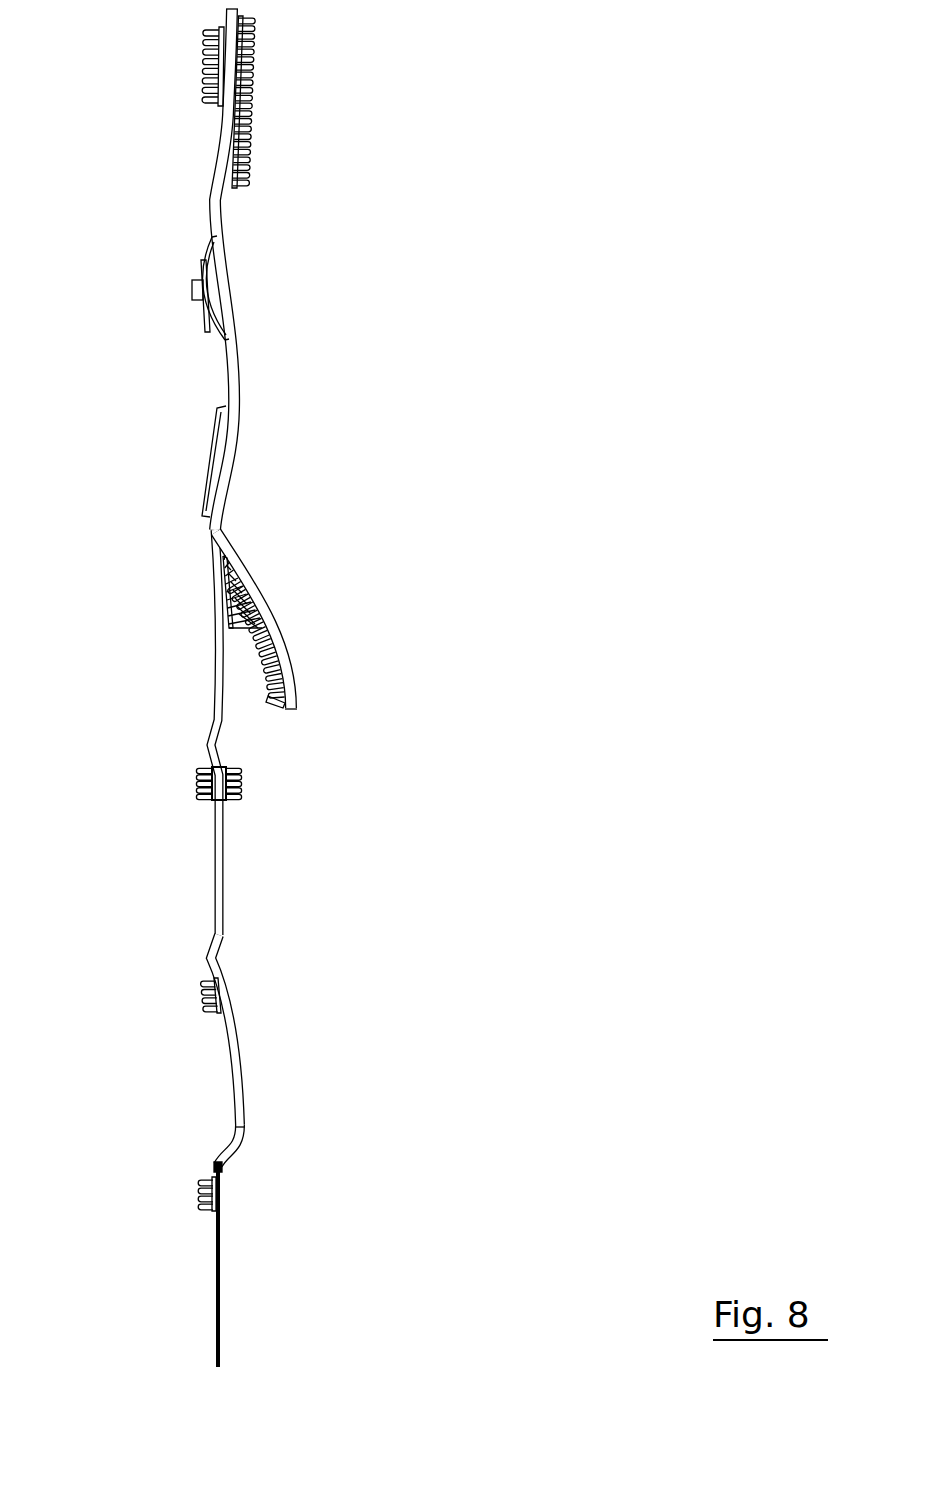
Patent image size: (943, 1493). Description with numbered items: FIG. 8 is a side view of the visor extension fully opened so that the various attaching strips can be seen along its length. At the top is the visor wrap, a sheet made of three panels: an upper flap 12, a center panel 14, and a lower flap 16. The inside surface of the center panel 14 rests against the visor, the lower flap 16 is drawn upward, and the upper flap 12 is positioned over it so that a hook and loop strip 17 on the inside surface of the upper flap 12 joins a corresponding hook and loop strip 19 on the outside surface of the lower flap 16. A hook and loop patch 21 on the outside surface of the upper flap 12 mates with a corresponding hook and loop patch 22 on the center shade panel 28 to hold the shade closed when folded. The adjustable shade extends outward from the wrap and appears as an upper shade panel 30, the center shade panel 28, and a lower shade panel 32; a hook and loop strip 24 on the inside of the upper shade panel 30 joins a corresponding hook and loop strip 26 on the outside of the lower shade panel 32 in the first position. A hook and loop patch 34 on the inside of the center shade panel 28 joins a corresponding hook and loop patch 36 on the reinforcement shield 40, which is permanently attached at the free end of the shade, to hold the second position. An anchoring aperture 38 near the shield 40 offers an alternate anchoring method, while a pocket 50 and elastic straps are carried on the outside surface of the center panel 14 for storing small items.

The upper flap 12 is at (210, 128).
The center panel 14 is at (236, 283).
The lower flap 16 is at (257, 583).
The hook and loop strip 17 is at (244, 167).
The corresponding hook and loop strip 19 is at (267, 704).
The hook and loop patch 21 is at (194, 33).
The corresponding hook and loop patch 22 is at (199, 785).
The hook and loop strip 24 is at (232, 631).
The corresponding hook and loop strip 26 is at (208, 1003).
The center shade panel 28 is at (224, 862).
The upper shade panel 30 is at (216, 564).
The lower shade panel 32 is at (242, 1028).
The hook and loop patch 34 is at (240, 790).
The corresponding hook and loop patch 36 is at (201, 1195).
The anchoring aperture 38 is at (246, 1128).
The reinforcement shield 40 is at (222, 1275).
The pocket 50 is at (194, 289).